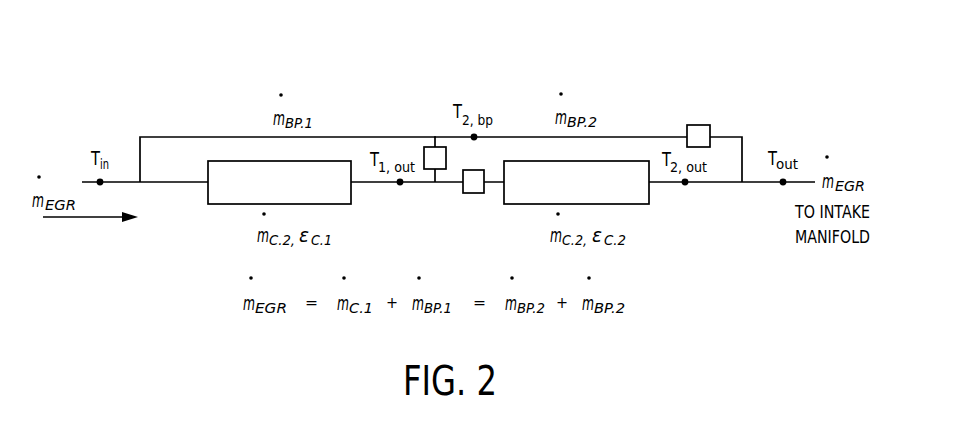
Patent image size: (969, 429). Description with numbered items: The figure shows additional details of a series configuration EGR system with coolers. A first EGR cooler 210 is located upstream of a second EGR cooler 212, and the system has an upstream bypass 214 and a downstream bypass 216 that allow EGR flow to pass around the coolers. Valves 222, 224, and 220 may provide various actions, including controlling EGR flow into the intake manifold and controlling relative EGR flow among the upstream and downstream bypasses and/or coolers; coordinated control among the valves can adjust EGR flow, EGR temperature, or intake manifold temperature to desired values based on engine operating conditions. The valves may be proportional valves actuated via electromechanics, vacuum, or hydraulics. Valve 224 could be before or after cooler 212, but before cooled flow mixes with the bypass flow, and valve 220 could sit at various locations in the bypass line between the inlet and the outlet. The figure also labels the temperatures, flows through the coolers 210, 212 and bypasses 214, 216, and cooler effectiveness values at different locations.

The cooler 210 is at (294, 192).
The cooler 212 is at (590, 192).
The upstream bypass 214 is at (181, 137).
The downstream bypass 216 is at (640, 137).
The valve 220 is at (698, 125).
The valve 222 is at (426, 148).
The valve 224 is at (474, 194).